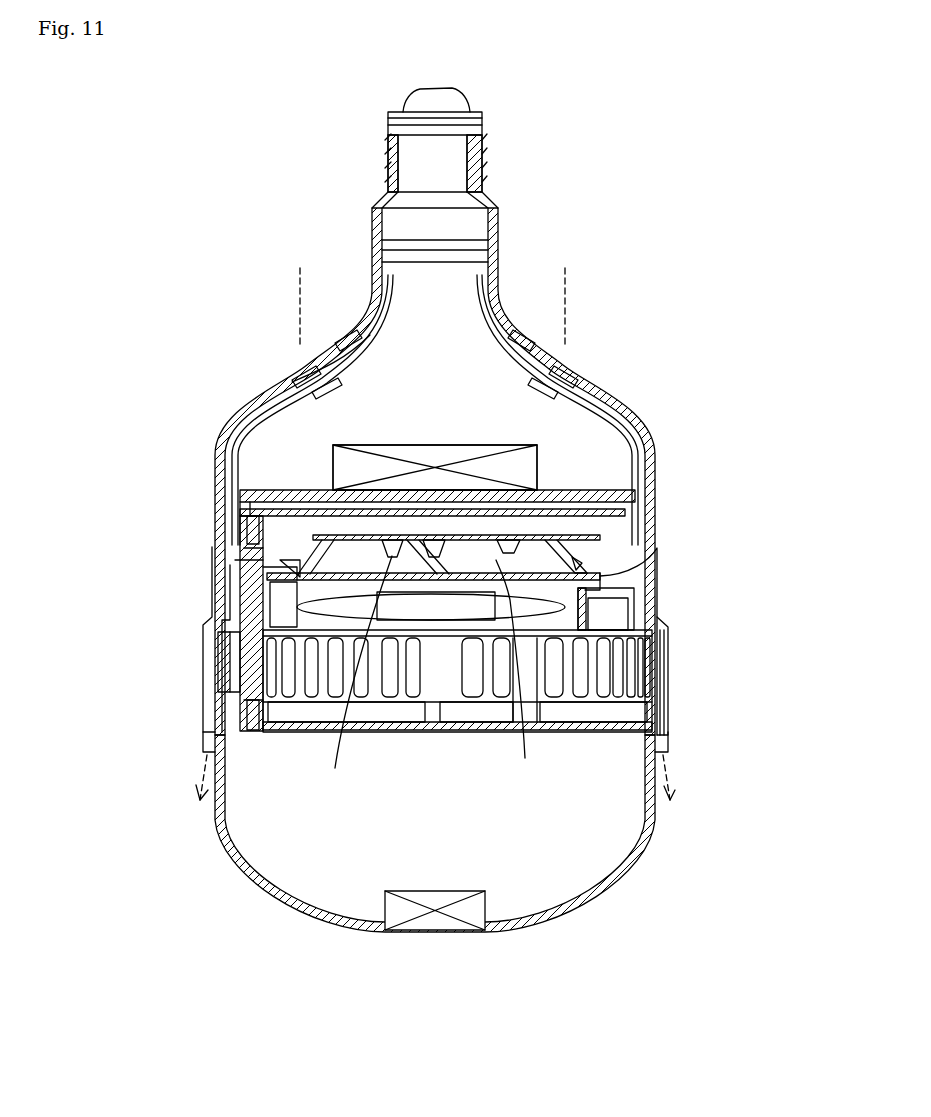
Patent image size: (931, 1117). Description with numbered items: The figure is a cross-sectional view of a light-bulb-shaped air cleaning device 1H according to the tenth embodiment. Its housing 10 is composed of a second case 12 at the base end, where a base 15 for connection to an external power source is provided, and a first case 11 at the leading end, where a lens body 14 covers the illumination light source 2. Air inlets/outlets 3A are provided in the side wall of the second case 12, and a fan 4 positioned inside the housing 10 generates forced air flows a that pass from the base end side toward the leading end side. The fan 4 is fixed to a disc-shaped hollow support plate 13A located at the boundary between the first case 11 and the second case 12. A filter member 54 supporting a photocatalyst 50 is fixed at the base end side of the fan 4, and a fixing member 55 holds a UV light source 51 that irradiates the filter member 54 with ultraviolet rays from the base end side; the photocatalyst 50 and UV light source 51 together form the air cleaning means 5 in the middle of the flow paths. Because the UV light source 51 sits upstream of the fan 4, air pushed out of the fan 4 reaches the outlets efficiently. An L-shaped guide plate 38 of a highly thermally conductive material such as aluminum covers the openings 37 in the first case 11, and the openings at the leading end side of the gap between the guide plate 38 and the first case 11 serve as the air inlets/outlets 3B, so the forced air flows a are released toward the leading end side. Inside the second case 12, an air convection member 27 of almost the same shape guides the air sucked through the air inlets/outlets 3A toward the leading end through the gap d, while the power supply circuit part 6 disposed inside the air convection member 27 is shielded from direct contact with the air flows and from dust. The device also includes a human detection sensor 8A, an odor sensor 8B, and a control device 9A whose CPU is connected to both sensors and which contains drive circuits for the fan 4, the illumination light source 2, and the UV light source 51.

The air cleaning device 1H is at (566, 218).
The base 15 is at (400, 116).
The housing 10 is at (674, 481).
The air convection member 27 is at (612, 430).
The gap d is at (255, 398).
The forced air flows a is at (300, 280).
The air inlets/outlets 3A is at (340, 338).
The odor sensor 8B is at (320, 385).
The control device 9A is at (433, 470).
The power supply circuit part 6 is at (474, 470).
The second case 12 is at (640, 512).
The fixing member 55 is at (262, 535).
The photocatalyst 50 is at (645, 578).
The air cleaning means 5 is at (417, 604).
The filter member 54 is at (262, 612).
The fan 4 is at (218, 664).
The support plate 13A is at (640, 606).
The illumination light source 2 is at (435, 735).
The UV light source 51 is at (425, 689).
The first case 11 is at (667, 640).
The openings 37 is at (652, 666).
The guide plate 38 is at (667, 705).
The air inlets/outlets 3B is at (208, 745).
The lens body 14 is at (594, 882).
The human detection sensor 8A is at (437, 920).